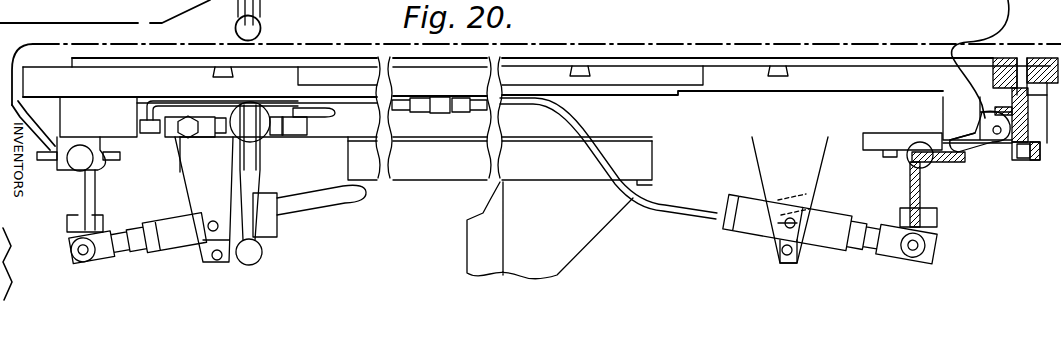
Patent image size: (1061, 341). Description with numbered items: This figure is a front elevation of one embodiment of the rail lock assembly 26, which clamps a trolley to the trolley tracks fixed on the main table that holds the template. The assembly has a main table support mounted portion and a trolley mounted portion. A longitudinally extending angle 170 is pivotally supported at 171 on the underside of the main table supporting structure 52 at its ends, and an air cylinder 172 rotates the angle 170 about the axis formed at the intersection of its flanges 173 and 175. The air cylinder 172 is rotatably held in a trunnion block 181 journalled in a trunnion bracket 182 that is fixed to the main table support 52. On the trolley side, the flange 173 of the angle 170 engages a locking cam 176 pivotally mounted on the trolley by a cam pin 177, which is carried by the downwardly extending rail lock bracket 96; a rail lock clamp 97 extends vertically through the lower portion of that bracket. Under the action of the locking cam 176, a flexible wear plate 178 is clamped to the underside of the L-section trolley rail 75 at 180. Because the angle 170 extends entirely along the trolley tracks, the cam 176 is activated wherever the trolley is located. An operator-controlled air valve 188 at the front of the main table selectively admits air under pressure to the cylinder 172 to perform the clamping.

The rail lock assembly 26 is at (1000, 212).
The main table supporting structure 52 is at (530, 80).
The trolley rail 75 is at (1025, 68).
The rail lock bracket 96 is at (1036, 126).
The rail lock clamp 97 is at (993, 142).
The longitudinally extending angle 170 is at (87, 192).
The pivot 171 is at (81, 156).
The air cylinder 172 is at (188, 248).
The flange 173 is at (990, 192).
The flange 175 is at (912, 193).
The locking cam 176 is at (962, 123).
The cam pin 177 is at (943, 118).
The flexible wear plate 178 is at (980, 59).
The clamping location on trolley rail underside 180 is at (977, 117).
The trunnion block 181 is at (780, 240).
The trunnion bracket 182 is at (501, 200).
The air valve 188 is at (250, 152).